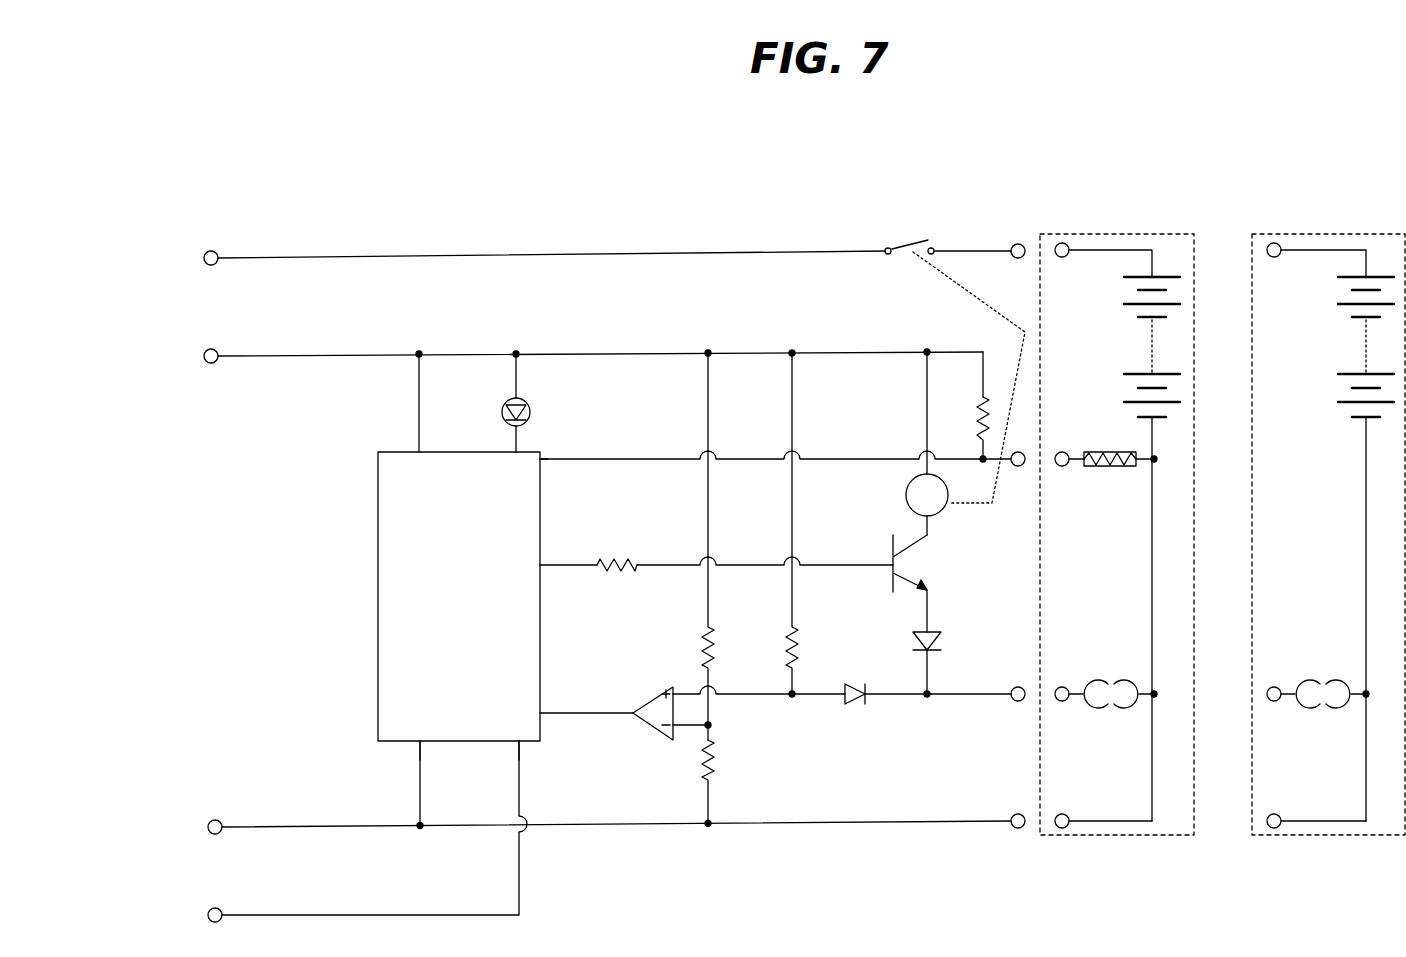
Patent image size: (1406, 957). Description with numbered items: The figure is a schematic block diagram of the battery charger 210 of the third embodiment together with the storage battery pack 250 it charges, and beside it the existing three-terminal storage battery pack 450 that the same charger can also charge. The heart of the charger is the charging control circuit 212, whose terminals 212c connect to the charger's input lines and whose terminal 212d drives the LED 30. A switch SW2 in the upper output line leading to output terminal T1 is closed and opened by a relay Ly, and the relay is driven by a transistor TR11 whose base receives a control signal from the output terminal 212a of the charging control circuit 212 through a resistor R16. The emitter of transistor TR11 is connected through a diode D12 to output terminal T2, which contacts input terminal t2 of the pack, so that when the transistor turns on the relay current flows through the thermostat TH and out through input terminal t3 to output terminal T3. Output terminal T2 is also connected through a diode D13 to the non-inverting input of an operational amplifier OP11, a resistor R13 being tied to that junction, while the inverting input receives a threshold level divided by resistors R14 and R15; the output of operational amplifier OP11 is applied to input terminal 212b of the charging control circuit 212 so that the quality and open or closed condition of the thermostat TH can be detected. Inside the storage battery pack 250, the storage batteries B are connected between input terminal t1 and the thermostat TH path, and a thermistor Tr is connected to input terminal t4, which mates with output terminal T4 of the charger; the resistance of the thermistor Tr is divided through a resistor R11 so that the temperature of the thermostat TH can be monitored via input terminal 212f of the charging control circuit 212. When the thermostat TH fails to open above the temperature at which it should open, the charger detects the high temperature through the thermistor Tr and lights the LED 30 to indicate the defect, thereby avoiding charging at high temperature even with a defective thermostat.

The battery charger 210 is at (640, 163).
The charging control circuit 212 is at (378, 450).
The output terminal of the charging control circuit 212a is at (545, 565).
The input terminal of the charging control circuit 212b is at (540, 715).
The terminal of the charging control circuit 212c is at (420, 745).
The terminal of the charging control circuit 212d is at (527, 447).
The input terminal of the charging control circuit 212f is at (545, 461).
The LED 30 is at (530, 408).
The storage battery pack 250 is at (1173, 156).
The existing storage battery pack 450 is at (1362, 156).
The switch SW2 is at (915, 240).
The output terminal T1 is at (1018, 243).
The output terminal T2 is at (1018, 686).
The output terminal T3 is at (1018, 814).
The output terminal T4 is at (1016, 470).
The input terminal t1 is at (1062, 242).
The input terminal t2 is at (1062, 686).
The input terminal t3 is at (1062, 813).
The input terminal t4 is at (1081, 488).
The storage batteries B is at (1125, 303).
The thermistor Tr is at (1105, 434).
The thermostat TH is at (1097, 708).
The resistor R11 is at (977, 435).
The resistor R13 is at (800, 645).
The resistor R14 is at (702, 633).
The resistor R15 is at (718, 765).
The resistor R16 is at (617, 559).
The transistor TR11 is at (893, 553).
The relay Ly is at (927, 443).
The operational amplifier OP11 is at (652, 700).
The diode D12 is at (941, 645).
The diode D13 is at (860, 700).